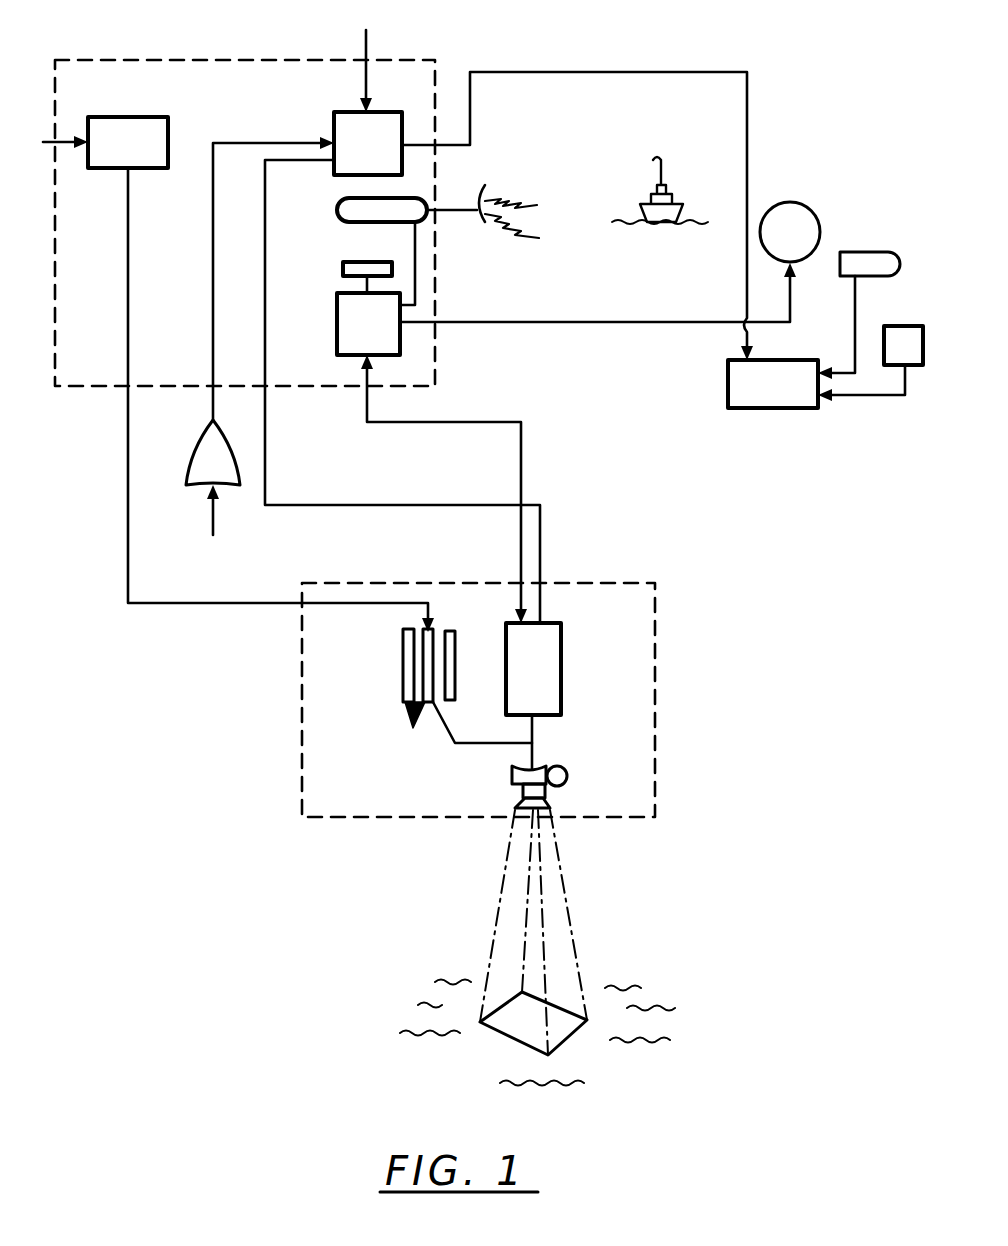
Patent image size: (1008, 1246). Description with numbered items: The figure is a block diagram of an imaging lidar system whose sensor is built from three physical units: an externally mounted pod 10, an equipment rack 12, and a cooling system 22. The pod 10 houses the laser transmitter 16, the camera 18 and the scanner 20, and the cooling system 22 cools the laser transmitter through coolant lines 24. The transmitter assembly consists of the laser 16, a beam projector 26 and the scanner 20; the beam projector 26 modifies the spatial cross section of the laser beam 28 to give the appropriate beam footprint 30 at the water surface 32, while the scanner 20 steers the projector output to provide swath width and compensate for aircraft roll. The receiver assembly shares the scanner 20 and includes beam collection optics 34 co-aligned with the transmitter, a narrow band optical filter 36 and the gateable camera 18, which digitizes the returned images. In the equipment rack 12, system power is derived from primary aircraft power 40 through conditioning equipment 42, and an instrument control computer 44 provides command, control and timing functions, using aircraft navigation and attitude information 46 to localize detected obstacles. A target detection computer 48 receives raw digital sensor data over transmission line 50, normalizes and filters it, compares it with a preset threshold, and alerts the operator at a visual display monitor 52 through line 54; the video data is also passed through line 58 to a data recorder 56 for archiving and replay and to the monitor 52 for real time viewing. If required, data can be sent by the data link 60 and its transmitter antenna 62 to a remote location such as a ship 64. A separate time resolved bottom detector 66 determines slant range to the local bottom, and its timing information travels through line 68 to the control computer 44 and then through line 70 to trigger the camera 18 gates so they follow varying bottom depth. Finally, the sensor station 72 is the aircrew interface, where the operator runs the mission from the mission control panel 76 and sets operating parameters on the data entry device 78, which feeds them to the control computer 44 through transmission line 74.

The externally mounted pod 10 is at (662, 654).
The equipment rack 12 is at (172, 58).
The laser transmitter 16 is at (434, 629).
The camera 18 is at (561, 640).
The scanner 20 is at (562, 767).
The cooling system 22 is at (403, 662).
The coolant lines 24 is at (408, 714).
The beam projector 26 is at (512, 778).
The laser beam 28 is at (565, 902).
The beam footprint 30 is at (530, 1037).
The water surface 32 is at (645, 1081).
The beam collection optics 34 is at (545, 796).
The narrow band optical filter 36 is at (552, 814).
The primary aircraft power 40 is at (63, 131).
The conditioning equipment 42 is at (136, 117).
The instrument control computer 44 is at (334, 128).
The aircraft navigation and attitude information 46 is at (367, 58).
The target detection computer 48 is at (337, 330).
The transmission line 50 is at (400, 422).
The visual display monitor 52 is at (808, 211).
The line 54 is at (500, 322).
The data recorder 56 is at (372, 262).
The line 58 is at (367, 286).
The data link 60 is at (337, 210).
The transmitter antenna 62 is at (484, 186).
The ship 64 is at (678, 182).
The time resolved bottom detector 66 is at (197, 452).
The line 68 is at (213, 224).
The line 70 is at (265, 294).
The sensor station 72 is at (780, 408).
The transmission line 74 is at (610, 72).
The mission control panel 76 is at (893, 326).
The data entry device 78 is at (893, 252).